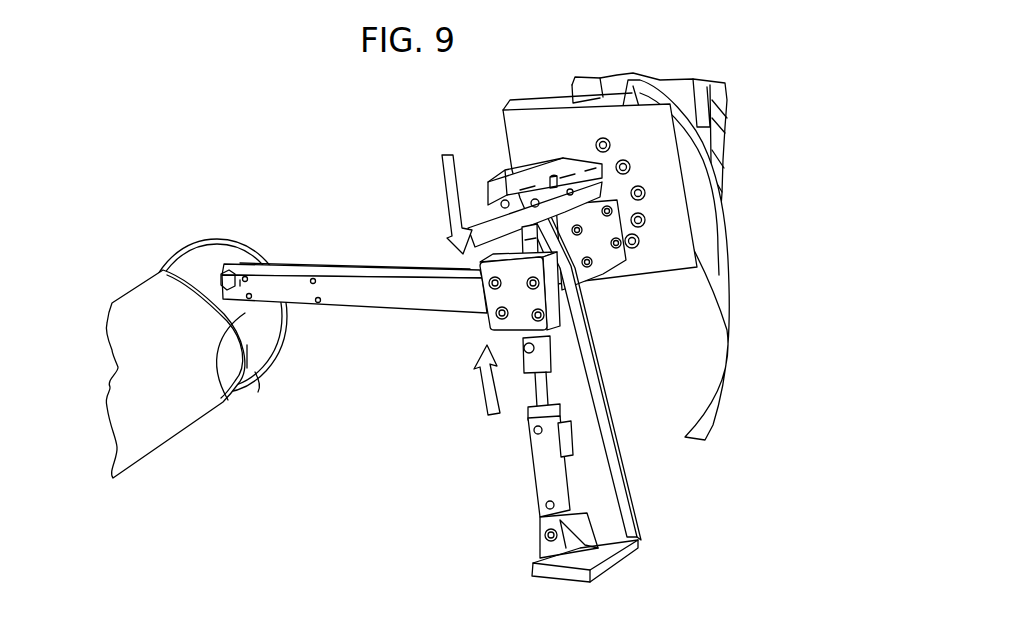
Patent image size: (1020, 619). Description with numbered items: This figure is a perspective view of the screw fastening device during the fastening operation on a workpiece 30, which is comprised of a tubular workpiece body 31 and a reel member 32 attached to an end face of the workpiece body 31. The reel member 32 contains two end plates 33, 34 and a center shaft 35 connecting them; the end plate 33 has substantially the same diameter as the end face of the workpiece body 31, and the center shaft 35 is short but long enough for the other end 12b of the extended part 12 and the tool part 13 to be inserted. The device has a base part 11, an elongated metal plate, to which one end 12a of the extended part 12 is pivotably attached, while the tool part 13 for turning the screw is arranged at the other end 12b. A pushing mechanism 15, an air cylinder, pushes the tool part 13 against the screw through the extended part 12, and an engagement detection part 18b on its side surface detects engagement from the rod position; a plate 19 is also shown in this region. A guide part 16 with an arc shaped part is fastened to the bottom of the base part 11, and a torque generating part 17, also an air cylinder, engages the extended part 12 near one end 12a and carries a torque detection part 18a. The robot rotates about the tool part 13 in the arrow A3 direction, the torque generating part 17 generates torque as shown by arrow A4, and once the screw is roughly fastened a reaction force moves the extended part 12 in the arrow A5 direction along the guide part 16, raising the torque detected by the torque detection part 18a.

The base part 11 is at (578, 385).
The extended part 12 is at (398, 270).
The one end of the extended part 12a is at (543, 293).
The other end of the extended part 12b is at (242, 284).
The tool part 13 is at (232, 278).
The pushing mechanism 15 is at (619, 277).
The guide part 16 is at (530, 237).
The torque generating part 17 is at (543, 472).
The torque detection part 18a is at (573, 443).
The engagement detection part 18b is at (560, 172).
The plate 19 is at (536, 128).
The workpiece 30 is at (112, 272).
The workpiece body 31 is at (180, 410).
The reel member 32 is at (265, 386).
The end plate 33 is at (231, 400).
The end plate 34 is at (203, 263).
The center shaft 35 is at (245, 313).
The arrow A3 is at (731, 358).
The arrow A4 is at (452, 380).
The arrow A5 is at (445, 186).